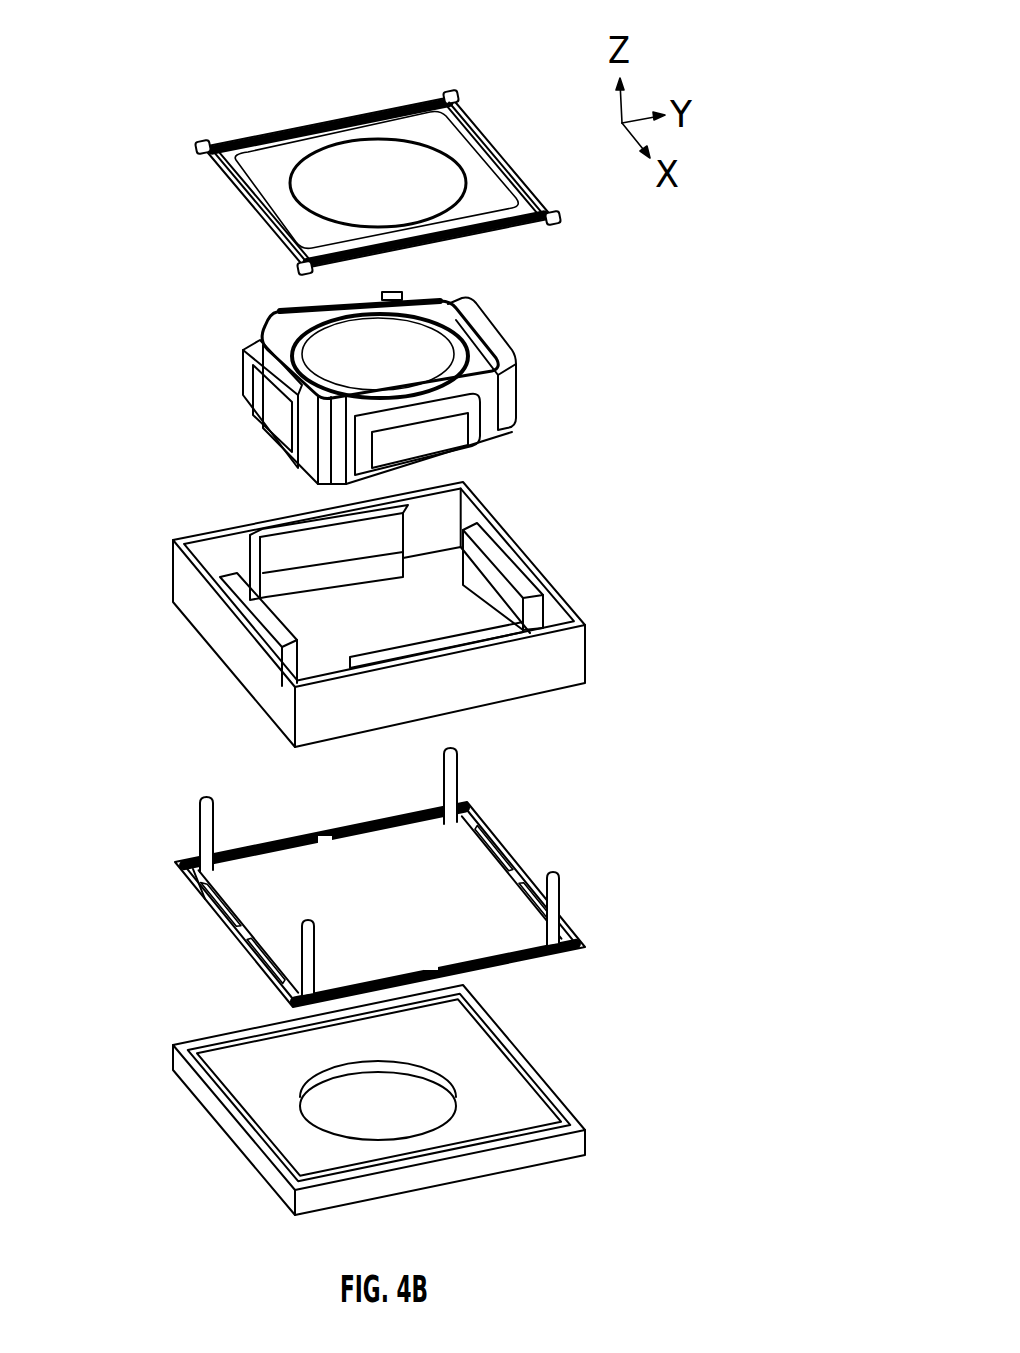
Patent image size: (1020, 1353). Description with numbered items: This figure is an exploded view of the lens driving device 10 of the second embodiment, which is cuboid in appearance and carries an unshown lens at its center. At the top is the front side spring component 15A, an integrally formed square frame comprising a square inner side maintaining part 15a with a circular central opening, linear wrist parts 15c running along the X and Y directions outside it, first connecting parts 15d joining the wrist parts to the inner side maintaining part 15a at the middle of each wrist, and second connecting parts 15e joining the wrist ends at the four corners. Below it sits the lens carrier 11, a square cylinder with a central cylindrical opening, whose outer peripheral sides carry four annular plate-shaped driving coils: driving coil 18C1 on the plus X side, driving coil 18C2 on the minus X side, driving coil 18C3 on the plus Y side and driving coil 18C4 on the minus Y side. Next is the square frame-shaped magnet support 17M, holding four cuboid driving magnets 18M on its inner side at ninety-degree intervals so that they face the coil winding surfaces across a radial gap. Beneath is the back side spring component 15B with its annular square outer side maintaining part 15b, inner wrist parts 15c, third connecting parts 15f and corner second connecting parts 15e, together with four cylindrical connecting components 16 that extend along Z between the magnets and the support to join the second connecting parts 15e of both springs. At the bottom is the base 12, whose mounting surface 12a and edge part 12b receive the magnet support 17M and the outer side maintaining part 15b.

The lens driving device 10 is at (280, 64).
The lens carrier 11 is at (380, 387).
The base 12 is at (366, 1113).
The mounting surface 12a is at (270, 1102).
The edge part 12b is at (513, 1148).
The front side spring component 15A is at (440, 136).
The back side spring component 15B is at (347, 866).
The inner side maintaining part 15a is at (333, 490).
The outer side maintaining part 15b is at (497, 840).
The wrist parts 15c is at (466, 112).
The first connecting parts 15d is at (252, 202).
The second connecting parts 15e is at (204, 144).
The third connecting parts 15f is at (437, 958).
The connecting components 16 is at (199, 830).
The magnet support 17M is at (406, 614).
The driving coil 18C1 is at (483, 465).
The driving coil 18C2 is at (385, 297).
The driving coil 18C3 is at (490, 338).
The driving coil 18C4 is at (243, 367).
The driving magnets 18M is at (490, 580).